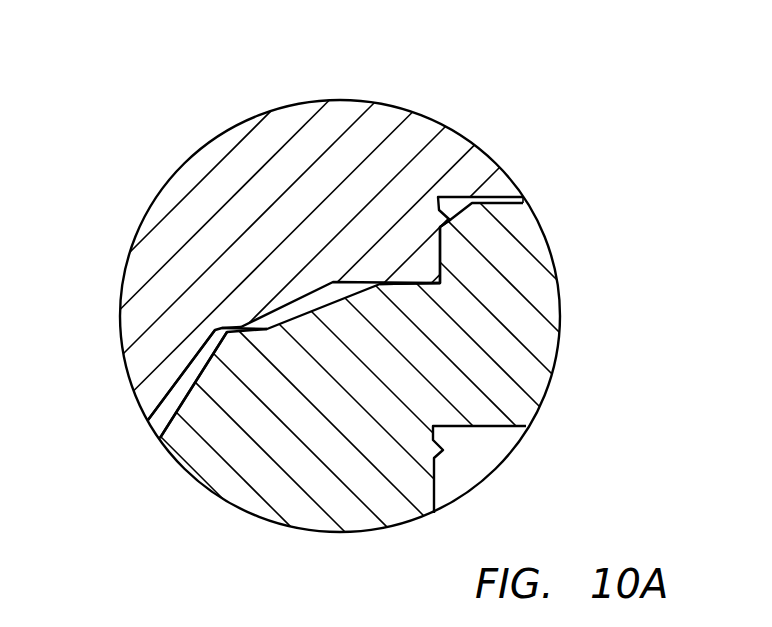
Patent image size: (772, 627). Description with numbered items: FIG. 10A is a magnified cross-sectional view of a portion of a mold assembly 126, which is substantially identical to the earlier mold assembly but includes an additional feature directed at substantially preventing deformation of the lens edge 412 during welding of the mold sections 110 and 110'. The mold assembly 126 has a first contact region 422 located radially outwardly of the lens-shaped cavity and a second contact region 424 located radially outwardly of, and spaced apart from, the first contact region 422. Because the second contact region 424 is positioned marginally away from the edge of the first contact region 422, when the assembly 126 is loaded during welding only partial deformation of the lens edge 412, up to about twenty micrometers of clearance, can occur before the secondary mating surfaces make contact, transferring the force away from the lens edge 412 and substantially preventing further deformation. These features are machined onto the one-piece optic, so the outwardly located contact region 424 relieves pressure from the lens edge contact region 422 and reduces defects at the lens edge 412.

The mold section 110 is at (335, 224).
The mold section 110' is at (417, 367).
The mold assembly 126 is at (592, 196).
The lens edge 412 is at (204, 358).
The first contact region 422 is at (243, 327).
The second contact region 424 is at (417, 283).